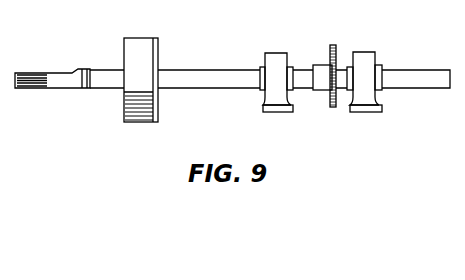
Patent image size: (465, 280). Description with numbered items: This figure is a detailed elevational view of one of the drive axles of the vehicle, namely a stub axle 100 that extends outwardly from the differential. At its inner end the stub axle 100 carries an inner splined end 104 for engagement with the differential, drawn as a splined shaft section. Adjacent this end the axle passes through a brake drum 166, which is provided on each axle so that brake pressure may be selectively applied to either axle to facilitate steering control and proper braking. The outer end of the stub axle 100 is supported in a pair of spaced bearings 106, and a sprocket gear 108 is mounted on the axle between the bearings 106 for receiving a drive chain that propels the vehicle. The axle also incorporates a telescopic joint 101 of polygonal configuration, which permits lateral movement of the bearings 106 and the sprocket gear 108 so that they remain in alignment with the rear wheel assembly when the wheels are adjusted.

The stub axle 100 is at (232, 75).
The telescopic joint 101 is at (230, 82).
The inner splined end 104 is at (30, 85).
The bearings 106 is at (275, 57).
The sprocket gear 108 is at (332, 107).
The brake drum 166 is at (148, 42).